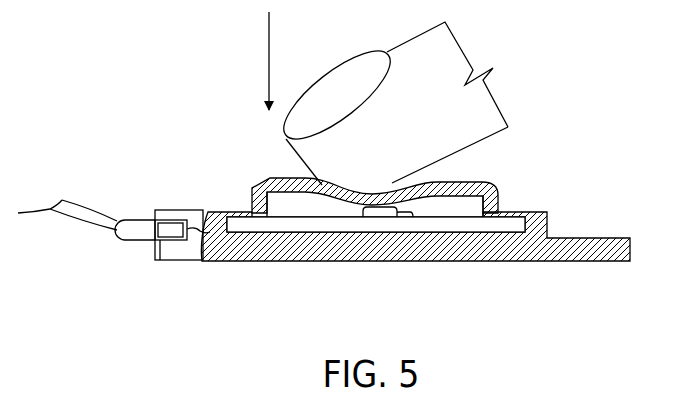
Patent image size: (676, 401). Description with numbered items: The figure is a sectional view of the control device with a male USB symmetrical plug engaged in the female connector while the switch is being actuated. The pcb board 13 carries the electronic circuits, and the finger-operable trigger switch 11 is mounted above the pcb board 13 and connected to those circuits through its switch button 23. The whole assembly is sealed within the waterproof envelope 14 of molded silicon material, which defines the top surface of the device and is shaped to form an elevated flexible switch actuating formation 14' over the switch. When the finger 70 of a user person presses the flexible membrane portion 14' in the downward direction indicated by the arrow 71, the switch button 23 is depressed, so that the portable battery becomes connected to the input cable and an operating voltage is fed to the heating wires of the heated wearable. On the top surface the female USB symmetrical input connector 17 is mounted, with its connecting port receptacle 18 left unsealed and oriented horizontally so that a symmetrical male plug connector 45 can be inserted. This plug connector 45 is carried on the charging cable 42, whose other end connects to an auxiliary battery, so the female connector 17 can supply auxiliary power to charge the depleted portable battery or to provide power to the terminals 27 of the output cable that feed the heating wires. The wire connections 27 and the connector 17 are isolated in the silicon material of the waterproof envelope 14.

The finger 70 is at (440, 60).
The arrow 71 is at (269, 38).
The finger-operable trigger switch 11 is at (270, 174).
The terminals 27 is at (436, 127).
The flexible switch actuating formation 14' is at (406, 189).
The waterproof envelope 14 is at (415, 211).
The pcb board 13 is at (475, 225).
The switch button 23 is at (413, 213).
The female USB symmetrical input connector 17 is at (191, 204).
The connecting port receptacle 18 is at (172, 243).
The symmetrical male plug connector 45 is at (142, 235).
The charging cable 42 is at (72, 208).